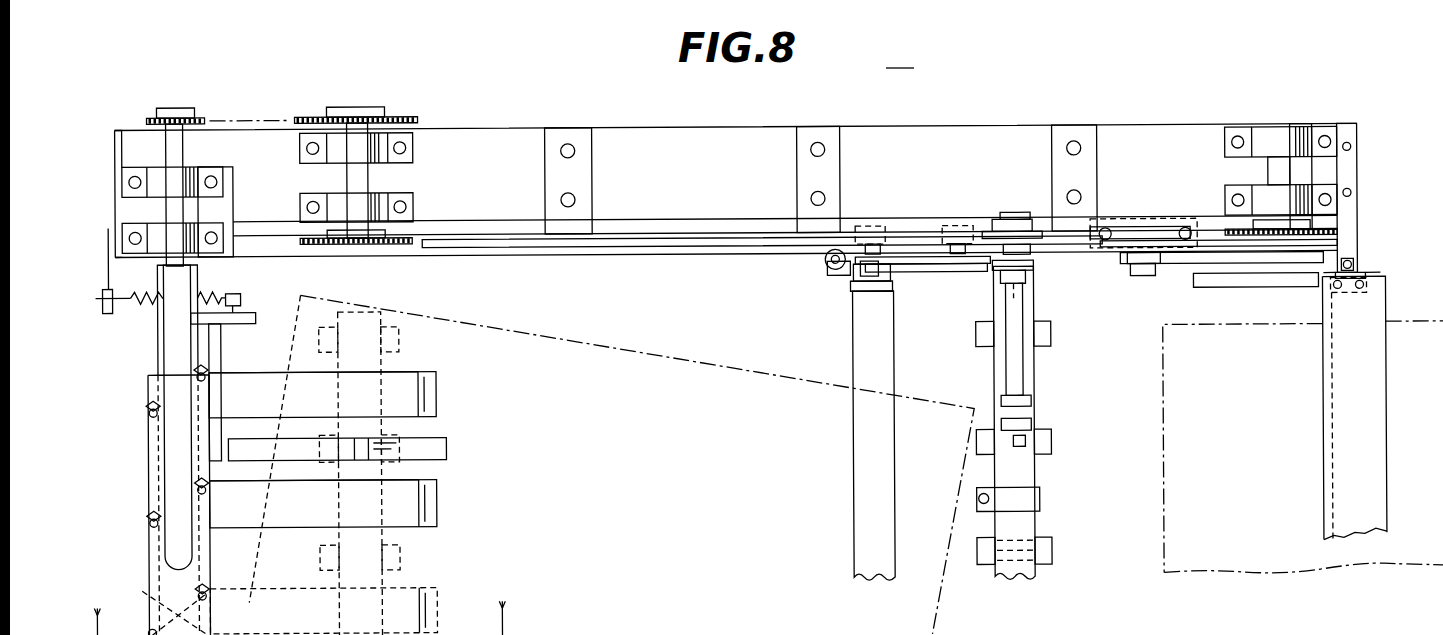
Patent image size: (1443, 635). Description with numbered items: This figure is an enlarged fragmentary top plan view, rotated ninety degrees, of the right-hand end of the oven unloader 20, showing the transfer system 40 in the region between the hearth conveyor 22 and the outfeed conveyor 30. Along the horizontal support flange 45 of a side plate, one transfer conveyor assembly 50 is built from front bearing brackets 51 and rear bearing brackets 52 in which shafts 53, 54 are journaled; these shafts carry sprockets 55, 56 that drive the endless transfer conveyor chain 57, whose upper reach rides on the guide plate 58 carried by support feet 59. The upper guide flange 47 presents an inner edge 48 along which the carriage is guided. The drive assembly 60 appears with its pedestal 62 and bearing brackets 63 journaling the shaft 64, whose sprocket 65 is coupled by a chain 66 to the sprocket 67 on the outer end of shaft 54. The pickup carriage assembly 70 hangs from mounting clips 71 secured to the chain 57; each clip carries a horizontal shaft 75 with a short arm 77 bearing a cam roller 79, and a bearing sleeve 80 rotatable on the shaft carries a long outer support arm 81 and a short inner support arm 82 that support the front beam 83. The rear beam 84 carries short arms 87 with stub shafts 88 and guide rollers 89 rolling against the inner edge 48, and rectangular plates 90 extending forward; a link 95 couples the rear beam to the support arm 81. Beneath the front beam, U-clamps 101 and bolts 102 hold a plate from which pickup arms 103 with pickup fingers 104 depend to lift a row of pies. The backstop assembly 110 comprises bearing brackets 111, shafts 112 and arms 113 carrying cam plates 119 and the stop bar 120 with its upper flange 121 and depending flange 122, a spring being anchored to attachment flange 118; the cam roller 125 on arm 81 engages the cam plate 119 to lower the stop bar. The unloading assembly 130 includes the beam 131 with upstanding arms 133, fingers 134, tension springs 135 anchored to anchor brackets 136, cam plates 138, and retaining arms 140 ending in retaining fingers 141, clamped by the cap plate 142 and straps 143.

The apparatus 20 is at (901, 55).
The hearth conveyor 22 is at (1372, 570).
The outfeed conveyor 30 is at (672, 352).
The transfer system 40 is at (1108, 100).
The horizontal support flange 45 is at (503, 138).
The upper guide flange 47 is at (635, 248).
The inner edge 48 is at (760, 254).
The transfer conveyor assembly 50 is at (432, 264).
The front bearing bracket 51 is at (1262, 190).
The rear bearing bracket 52 is at (386, 196).
The shaft 53 is at (1292, 178).
The shaft 54 is at (348, 180).
The sprocket 55 is at (1332, 233).
The sprocket 56 is at (298, 242).
The transfer conveyor chain 57 is at (985, 225).
The guide plate 58 is at (640, 236).
The support foot 59 is at (593, 150).
The drive assembly 60 is at (119, 99).
The pedestal 62 is at (232, 190).
The bearing bracket 63 is at (160, 228).
The shaft 64 is at (172, 148).
The sprocket 65 is at (165, 118).
The chain 66 is at (258, 116).
The sprocket 67 is at (406, 113).
The pickup carriage assembly 70 is at (1093, 488).
The mounting clip 71 is at (1020, 214).
The horizontal shaft 75 is at (1030, 252).
The short arm 77 is at (1000, 425).
The cam roller 79 is at (1022, 448).
The bearing sleeve 80 is at (1003, 362).
The outer support arm 81 is at (1032, 270).
The inner support arm 82 is at (1032, 404).
The front beam 83 is at (352, 312).
The rear beam 84 is at (855, 545).
The short arm 87 is at (845, 282).
The stub shaft 88 is at (823, 260).
The guide roller 89 is at (830, 275).
The rectangular plate 90 is at (937, 272).
The link 95 is at (952, 275).
The U-clamp 101 is at (1038, 506).
The bolt 102 is at (978, 500).
The pickup arm 103 is at (1015, 560).
The pickup finger 104 is at (398, 343).
The backstop assembly 110 is at (1396, 276).
The bearing bracket 111 is at (1125, 221).
The shaft 112 is at (1142, 268).
The arm 113 is at (1176, 266).
The attachment flange 118 is at (1352, 246).
The cam plate 119 is at (1237, 284).
The stop bar 120 is at (1318, 357).
The upper flange 121 is at (1378, 405).
The depending flange 122 is at (1328, 540).
The cam roller 125 is at (1005, 283).
The unloading assembly 130 is at (522, 410).
The beam 131 is at (155, 345).
The upstanding arm 133 is at (213, 320).
The finger 134 is at (258, 295).
The tension spring 135 is at (230, 280).
The anchor bracket 136 is at (100, 292).
The cam plate 138 is at (445, 452).
The retaining arm 140 is at (311, 529).
The retaining finger 141 is at (437, 588).
The cap plate 142 is at (147, 548).
The strap 143 is at (145, 598).